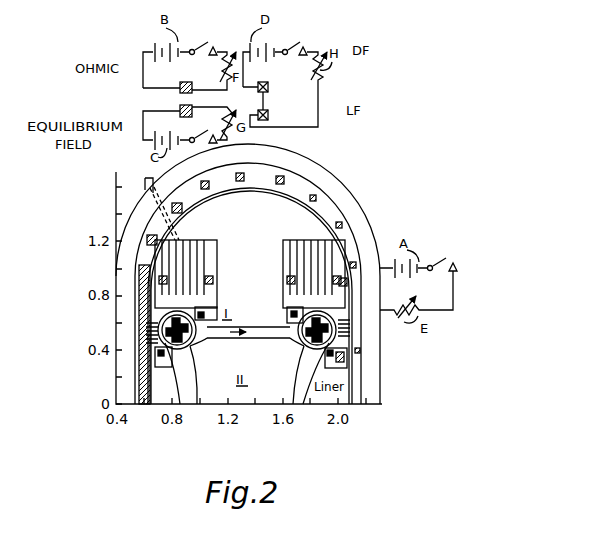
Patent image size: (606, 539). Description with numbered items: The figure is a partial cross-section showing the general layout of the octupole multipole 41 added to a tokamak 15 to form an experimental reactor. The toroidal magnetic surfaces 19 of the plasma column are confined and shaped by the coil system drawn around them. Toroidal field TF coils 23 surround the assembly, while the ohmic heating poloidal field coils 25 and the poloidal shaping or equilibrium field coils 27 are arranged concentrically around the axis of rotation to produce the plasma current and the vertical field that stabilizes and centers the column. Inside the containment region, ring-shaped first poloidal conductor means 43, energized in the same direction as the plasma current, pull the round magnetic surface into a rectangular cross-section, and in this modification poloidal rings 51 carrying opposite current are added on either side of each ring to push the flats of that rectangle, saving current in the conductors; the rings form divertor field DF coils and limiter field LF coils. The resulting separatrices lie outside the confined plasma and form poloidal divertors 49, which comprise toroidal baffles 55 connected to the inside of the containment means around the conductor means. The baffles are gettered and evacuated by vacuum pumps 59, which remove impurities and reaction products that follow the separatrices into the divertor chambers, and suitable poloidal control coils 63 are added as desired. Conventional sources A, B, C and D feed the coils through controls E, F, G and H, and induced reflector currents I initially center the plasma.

The tokamak 15 is at (356, 181).
The toroidal magnetic surfaces 19 is at (200, 352).
The toroidal field coil 23 is at (358, 213).
The ohmic heating poloidal field coil 25 is at (196, 78).
The poloidal shaping field coil 27 is at (344, 273).
The multipole 41 is at (294, 306).
The first poloidal conductor means 43 is at (287, 317).
The poloidal divertor 49 is at (160, 318).
The poloidal rings 51 is at (298, 340).
The toroidal baffles 55 is at (190, 248).
The vacuum pumps 59 is at (146, 178).
The poloidal control coils 63 is at (280, 176).